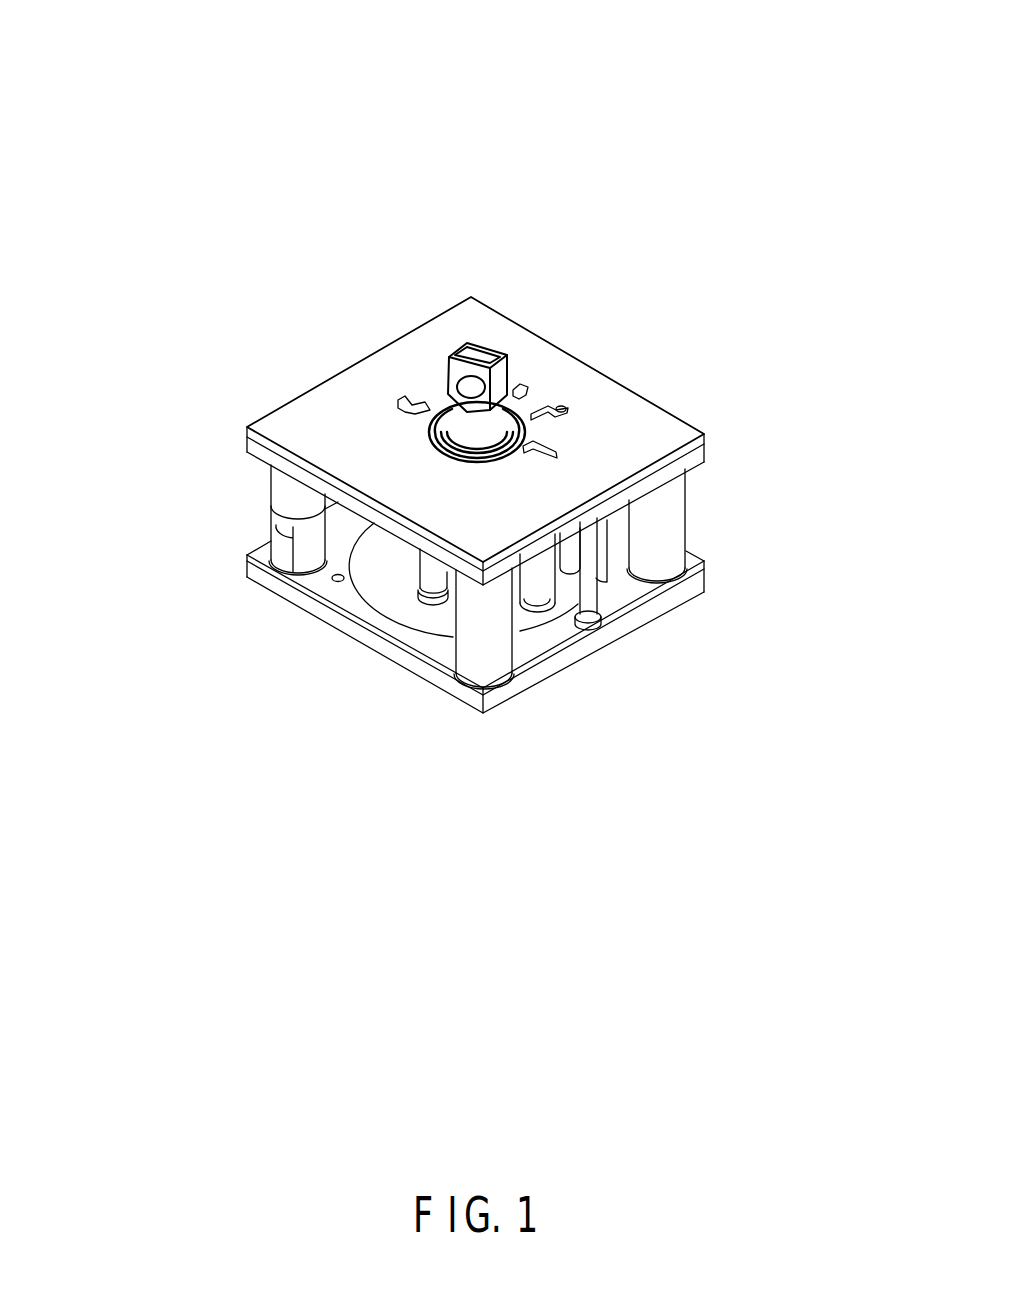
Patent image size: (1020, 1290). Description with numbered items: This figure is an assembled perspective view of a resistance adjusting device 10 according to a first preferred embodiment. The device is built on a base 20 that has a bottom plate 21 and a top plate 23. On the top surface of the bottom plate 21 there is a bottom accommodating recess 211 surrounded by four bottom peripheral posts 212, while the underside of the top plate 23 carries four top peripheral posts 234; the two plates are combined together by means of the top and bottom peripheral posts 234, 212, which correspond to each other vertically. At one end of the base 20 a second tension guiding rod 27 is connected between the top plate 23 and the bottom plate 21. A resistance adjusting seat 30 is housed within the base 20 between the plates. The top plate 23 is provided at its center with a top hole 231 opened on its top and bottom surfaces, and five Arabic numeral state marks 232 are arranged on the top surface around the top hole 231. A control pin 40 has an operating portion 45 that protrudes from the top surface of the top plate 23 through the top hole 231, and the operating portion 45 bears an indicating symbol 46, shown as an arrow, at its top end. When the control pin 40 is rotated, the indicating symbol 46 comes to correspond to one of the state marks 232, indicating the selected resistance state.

The resistance adjusting device 10 is at (656, 100).
The base 20 is at (127, 380).
The bottom plate 21 is at (253, 578).
The top plate 23 is at (313, 414).
The second tension guiding rod 27 is at (590, 590).
The resistance adjusting seat 30 is at (440, 620).
The control pin 40 is at (441, 343).
The operating portion 45 is at (502, 380).
The indicating symbol 46 is at (470, 355).
The bottom accommodating recess 211 is at (413, 612).
The bottom peripheral posts 212 is at (302, 558).
The top hole 231 is at (500, 452).
The state marks 232 is at (562, 413).
The top peripheral posts 234 is at (297, 500).